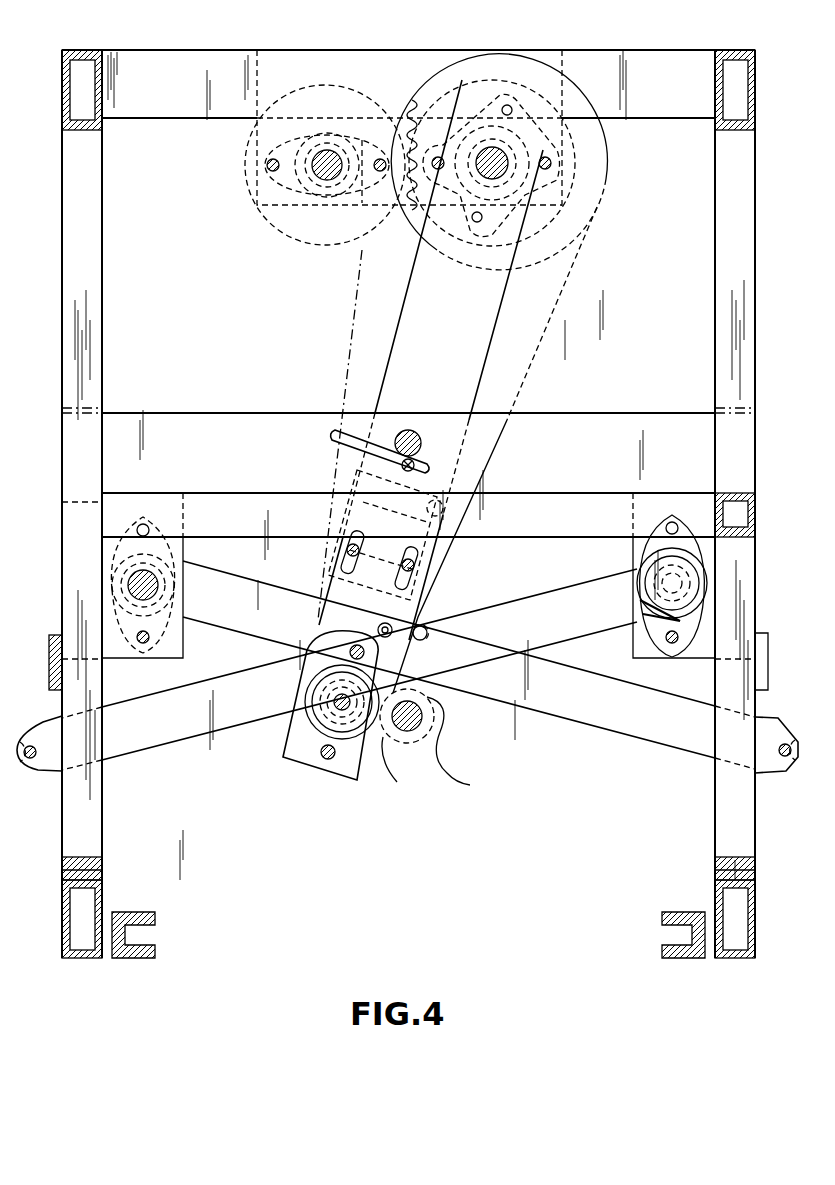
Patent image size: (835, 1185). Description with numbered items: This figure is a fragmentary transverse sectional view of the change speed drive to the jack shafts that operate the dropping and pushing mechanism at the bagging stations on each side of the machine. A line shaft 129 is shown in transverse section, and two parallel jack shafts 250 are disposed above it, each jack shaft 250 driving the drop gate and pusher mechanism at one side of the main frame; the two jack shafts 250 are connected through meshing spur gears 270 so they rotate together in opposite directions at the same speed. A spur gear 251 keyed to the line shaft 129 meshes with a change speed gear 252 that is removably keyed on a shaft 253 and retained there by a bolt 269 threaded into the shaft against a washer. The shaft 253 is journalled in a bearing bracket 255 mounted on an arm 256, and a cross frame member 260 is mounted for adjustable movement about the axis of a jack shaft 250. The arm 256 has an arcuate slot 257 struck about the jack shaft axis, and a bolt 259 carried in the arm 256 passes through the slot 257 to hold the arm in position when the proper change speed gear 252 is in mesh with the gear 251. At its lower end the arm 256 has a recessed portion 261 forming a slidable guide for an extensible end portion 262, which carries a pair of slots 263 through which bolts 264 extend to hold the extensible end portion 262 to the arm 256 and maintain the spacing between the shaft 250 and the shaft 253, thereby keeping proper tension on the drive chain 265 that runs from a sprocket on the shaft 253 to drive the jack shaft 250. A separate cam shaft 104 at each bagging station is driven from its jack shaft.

The cam shaft 104 is at (425, 450).
The line shaft 129 is at (420, 728).
The jack shaft 250 is at (330, 150).
The spur gear 251 is at (437, 716).
The change speed gear 252 is at (322, 752).
The shaft 253 is at (330, 698).
The bearing bracket 255 is at (322, 768).
The arm 256 is at (405, 298).
The slot 257 is at (333, 439).
The bolt 259 is at (436, 470).
The cross frame member 260 is at (337, 413).
The recessed portion 261 is at (452, 514).
The extensible end portion 262 is at (424, 626).
The slots 263 is at (425, 552).
The bolts 264 is at (428, 566).
The drive chain 265 is at (540, 360).
The bolt 269 is at (338, 704).
The spur gears 270 is at (316, 85).